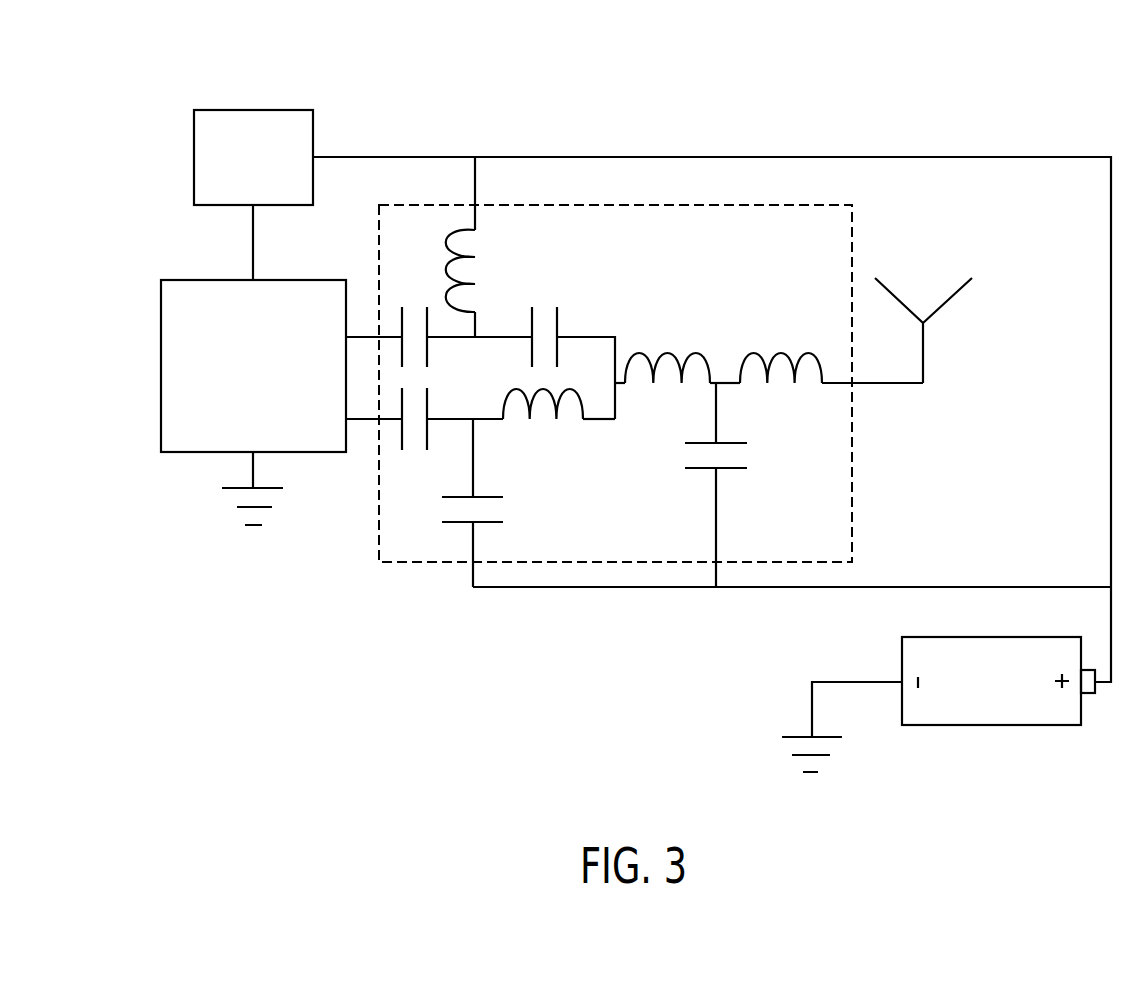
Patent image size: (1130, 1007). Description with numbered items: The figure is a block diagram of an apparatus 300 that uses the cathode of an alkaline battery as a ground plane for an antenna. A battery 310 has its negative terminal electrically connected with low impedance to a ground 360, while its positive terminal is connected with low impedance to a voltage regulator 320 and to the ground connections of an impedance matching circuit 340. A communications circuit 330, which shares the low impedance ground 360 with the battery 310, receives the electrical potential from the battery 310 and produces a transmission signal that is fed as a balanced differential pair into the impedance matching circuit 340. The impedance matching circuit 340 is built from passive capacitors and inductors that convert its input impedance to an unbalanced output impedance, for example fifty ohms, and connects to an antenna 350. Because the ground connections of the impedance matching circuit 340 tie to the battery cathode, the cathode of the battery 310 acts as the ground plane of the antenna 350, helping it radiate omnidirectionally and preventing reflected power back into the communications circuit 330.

The apparatus 300 is at (518, 82).
The battery 310 is at (902, 653).
The voltage regulator 320 is at (194, 157).
The communications circuit 330 is at (161, 360).
The impedance matching circuit 340 is at (852, 478).
The antenna 350 is at (947, 303).
The ground 360 is at (240, 507).